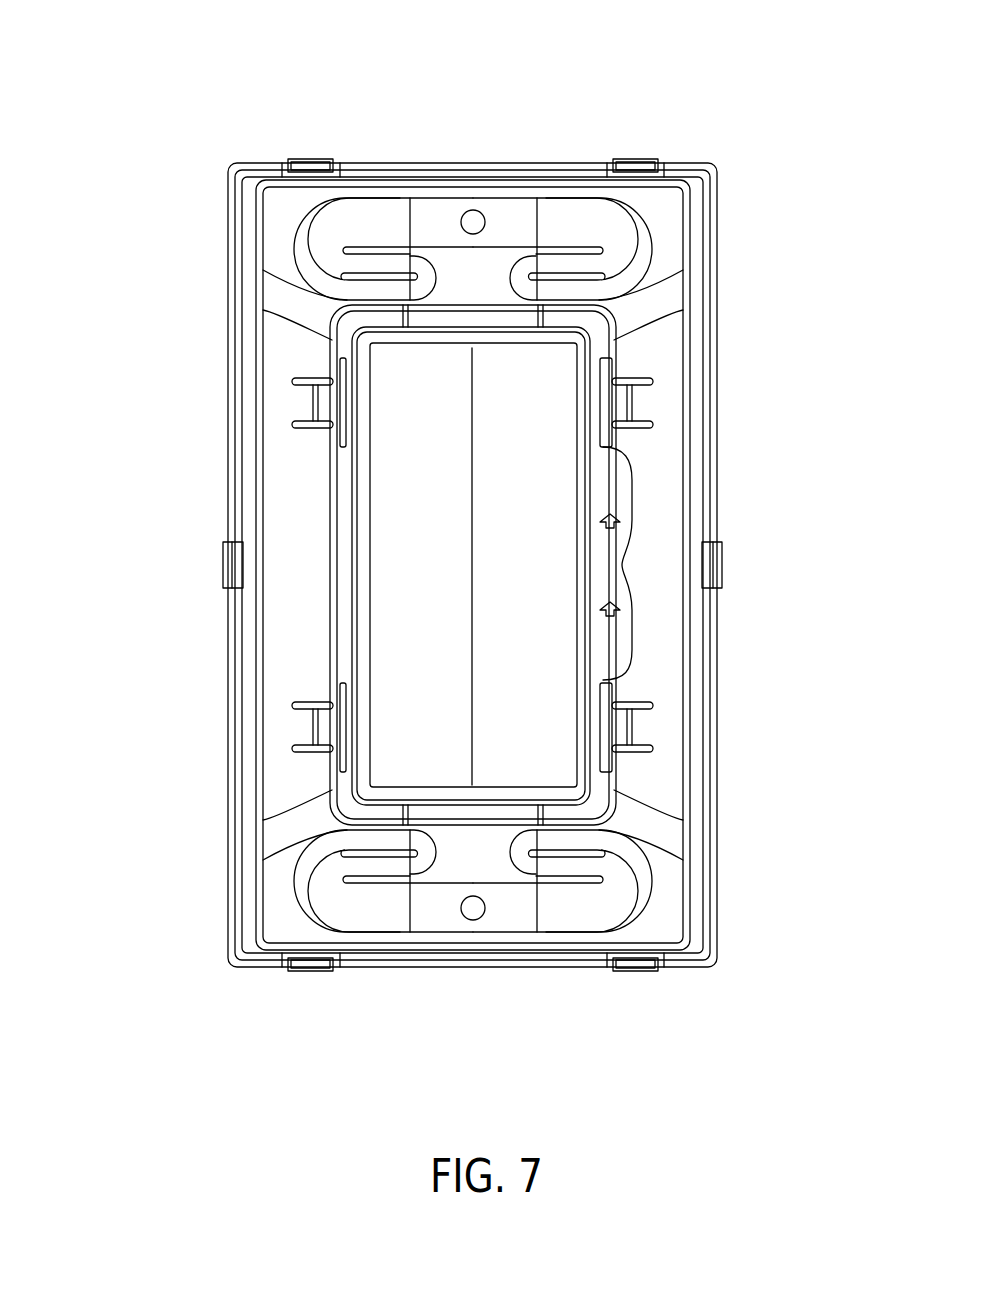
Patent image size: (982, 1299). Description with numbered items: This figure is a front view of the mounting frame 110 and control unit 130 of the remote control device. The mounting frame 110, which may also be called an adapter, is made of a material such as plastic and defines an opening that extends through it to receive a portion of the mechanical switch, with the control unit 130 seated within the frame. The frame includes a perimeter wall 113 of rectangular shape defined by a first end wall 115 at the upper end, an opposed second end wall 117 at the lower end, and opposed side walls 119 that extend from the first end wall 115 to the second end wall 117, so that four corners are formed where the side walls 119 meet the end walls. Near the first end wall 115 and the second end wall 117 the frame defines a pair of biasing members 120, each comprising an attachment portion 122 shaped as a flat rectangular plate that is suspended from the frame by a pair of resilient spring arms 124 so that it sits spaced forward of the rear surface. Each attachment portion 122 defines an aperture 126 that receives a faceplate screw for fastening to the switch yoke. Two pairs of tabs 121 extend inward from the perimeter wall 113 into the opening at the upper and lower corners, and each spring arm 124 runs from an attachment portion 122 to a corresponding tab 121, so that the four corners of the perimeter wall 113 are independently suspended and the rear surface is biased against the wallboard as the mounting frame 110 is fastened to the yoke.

The mounting frame 110 is at (241, 162).
The perimeter wall 113 is at (717, 385).
The first end wall 115 is at (483, 160).
The second end wall 117 is at (483, 968).
The side walls 119 is at (228, 672).
The biasing members 120 is at (334, 200).
The tabs 121 is at (280, 213).
The attachment portion 122 is at (513, 213).
The resilient spring arms 124 is at (375, 222).
The aperture 126 is at (465, 219).
The control unit 130 is at (418, 468).